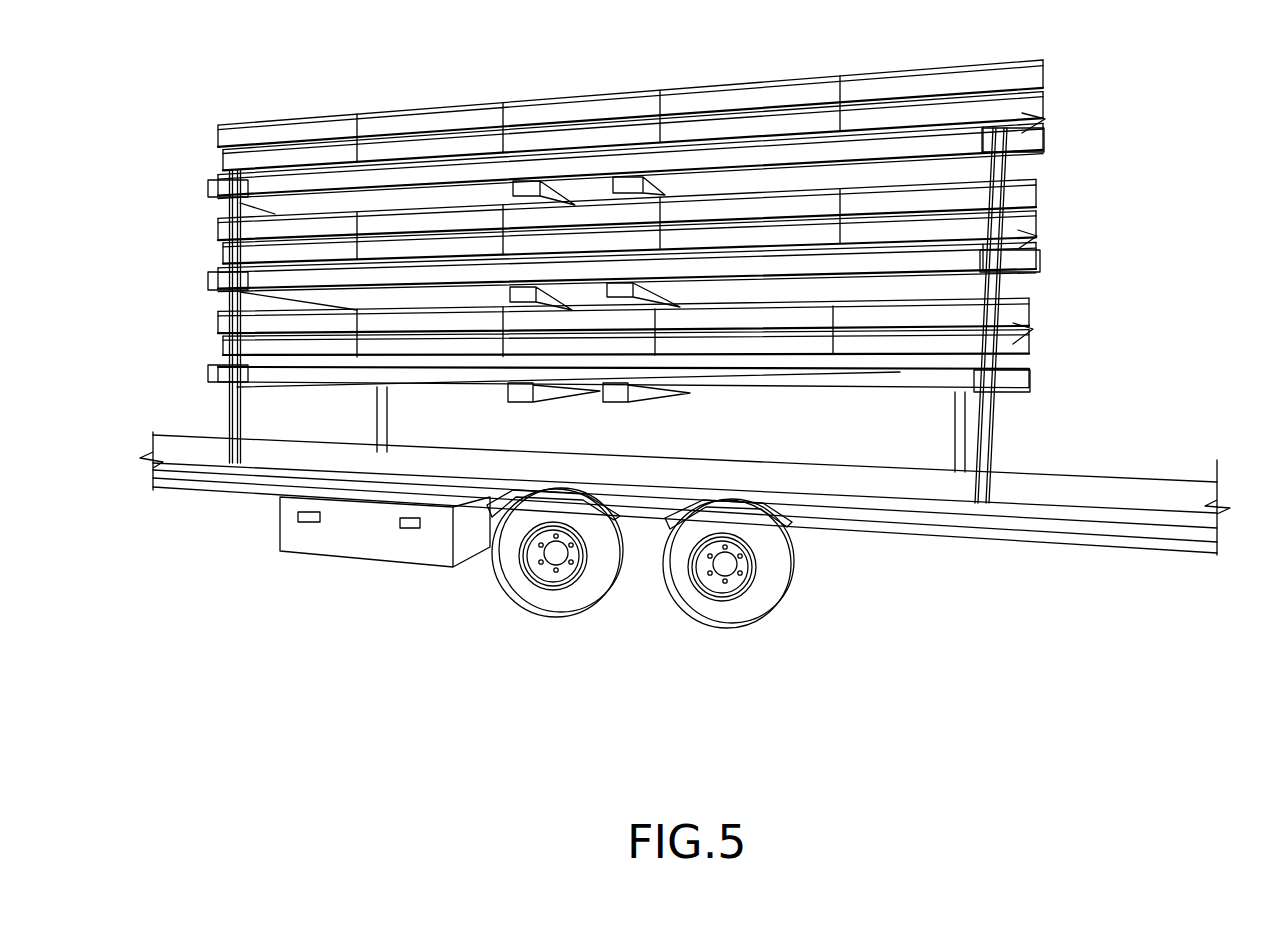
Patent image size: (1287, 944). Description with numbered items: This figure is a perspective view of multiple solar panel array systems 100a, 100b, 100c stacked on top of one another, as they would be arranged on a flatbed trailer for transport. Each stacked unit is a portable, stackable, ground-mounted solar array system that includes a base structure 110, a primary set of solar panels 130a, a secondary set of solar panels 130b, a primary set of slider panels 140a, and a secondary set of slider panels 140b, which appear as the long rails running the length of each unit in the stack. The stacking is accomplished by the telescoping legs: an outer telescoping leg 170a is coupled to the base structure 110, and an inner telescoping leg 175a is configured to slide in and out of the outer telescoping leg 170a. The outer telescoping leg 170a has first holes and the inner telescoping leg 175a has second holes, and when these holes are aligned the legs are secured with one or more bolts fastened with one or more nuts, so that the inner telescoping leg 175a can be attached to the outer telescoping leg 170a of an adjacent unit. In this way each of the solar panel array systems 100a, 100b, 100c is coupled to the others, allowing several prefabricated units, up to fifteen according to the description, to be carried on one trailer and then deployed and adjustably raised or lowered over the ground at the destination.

The solar panel array system 100a is at (1164, 76).
The solar panel array system 100b is at (1164, 211).
The solar panel array system 100c is at (1164, 344).
The primary set of solar panels 130a is at (1045, 62).
The primary set of slider panels 140a is at (1048, 72).
The secondary set of solar panels 130b is at (1040, 97).
The secondary set of slider panels 140b is at (1038, 111).
The outer telescoping leg 170a is at (236, 402).
The inner telescoping leg 175a is at (232, 379).
The base structure 110 is at (487, 378).